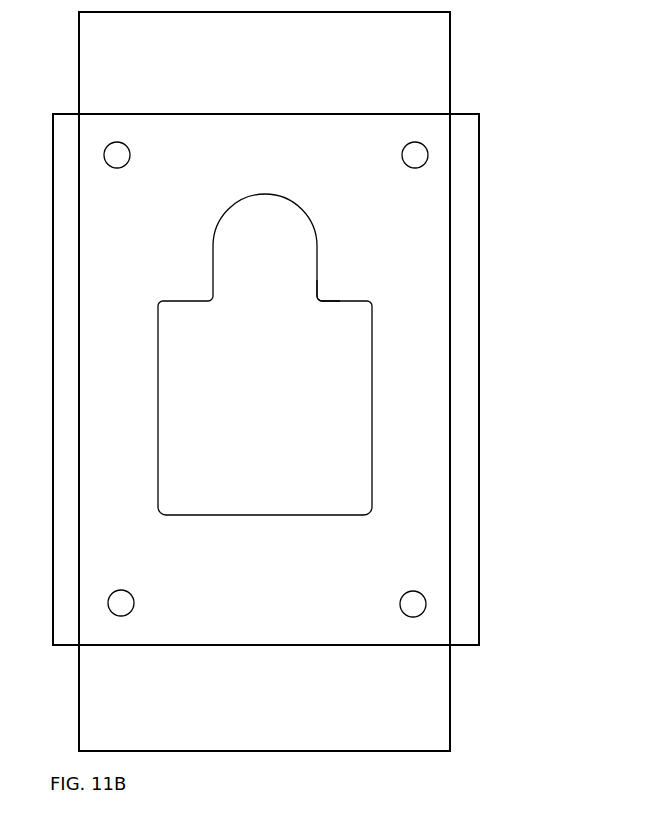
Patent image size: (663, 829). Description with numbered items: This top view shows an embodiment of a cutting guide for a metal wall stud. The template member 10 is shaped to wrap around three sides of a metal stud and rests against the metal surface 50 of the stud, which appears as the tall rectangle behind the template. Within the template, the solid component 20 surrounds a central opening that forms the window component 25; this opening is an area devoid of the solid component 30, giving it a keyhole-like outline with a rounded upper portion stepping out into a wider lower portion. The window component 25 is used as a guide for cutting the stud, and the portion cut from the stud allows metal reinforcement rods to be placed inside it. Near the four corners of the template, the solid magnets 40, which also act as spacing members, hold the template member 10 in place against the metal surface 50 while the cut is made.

The template member 10 is at (465, 110).
The solid component 20 is at (272, 152).
The window component 25 is at (320, 291).
The solid component 30 is at (240, 340).
The solid magnets 40 is at (112, 150).
The metal surface 50 is at (450, 725).